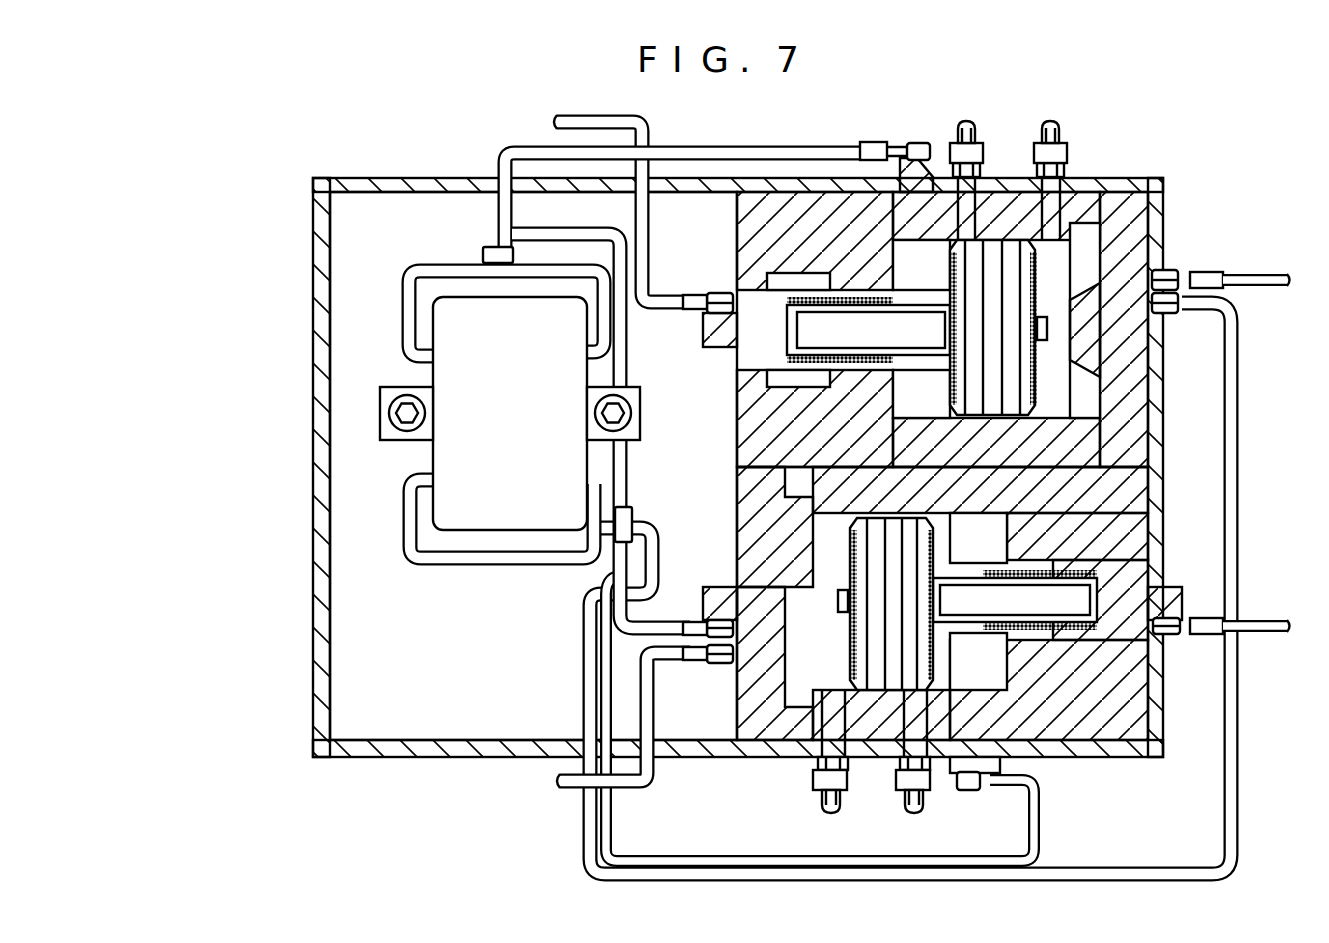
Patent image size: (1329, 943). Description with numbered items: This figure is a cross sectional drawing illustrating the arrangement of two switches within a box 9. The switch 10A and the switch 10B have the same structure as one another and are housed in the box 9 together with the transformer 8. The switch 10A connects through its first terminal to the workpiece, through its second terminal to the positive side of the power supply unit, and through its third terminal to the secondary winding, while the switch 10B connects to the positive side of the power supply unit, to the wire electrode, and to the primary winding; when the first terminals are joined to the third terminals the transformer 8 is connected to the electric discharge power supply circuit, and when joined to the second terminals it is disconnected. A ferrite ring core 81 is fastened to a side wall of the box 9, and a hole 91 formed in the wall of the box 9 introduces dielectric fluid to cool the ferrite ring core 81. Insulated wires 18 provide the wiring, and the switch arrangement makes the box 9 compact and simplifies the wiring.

The transformer 8 is at (364, 306).
The box 9 is at (363, 180).
The hole 91 is at (453, 180).
The switch 10A is at (1213, 103).
The switch 10B is at (768, 762).
The insulated wires 18 is at (583, 117).
The ferrite ring core 81 is at (445, 450).